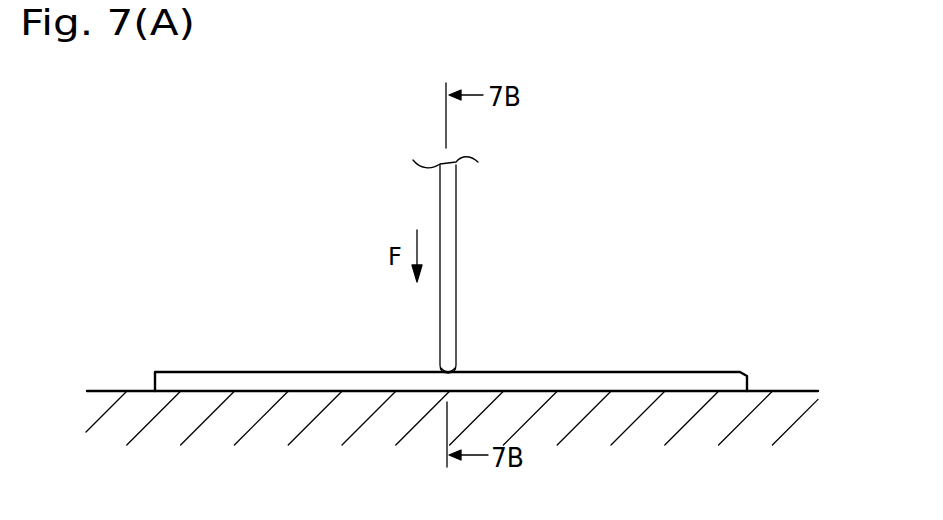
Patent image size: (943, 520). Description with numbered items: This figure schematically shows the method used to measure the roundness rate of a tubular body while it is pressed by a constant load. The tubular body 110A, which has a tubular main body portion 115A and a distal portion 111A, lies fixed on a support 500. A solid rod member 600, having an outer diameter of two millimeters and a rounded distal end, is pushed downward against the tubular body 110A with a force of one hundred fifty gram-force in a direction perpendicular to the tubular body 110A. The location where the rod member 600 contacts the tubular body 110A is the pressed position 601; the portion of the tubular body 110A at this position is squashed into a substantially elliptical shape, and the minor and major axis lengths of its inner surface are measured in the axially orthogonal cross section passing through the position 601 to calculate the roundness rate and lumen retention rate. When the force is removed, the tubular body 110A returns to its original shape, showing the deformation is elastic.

The rod member 600 is at (456, 245).
The position of the tubular body against which the rod member is pressed 601 is at (458, 352).
The tubular body 110A is at (598, 372).
The tubular main body portion 115A is at (297, 372).
The distal portion 111A is at (737, 372).
The support 500 is at (763, 391).